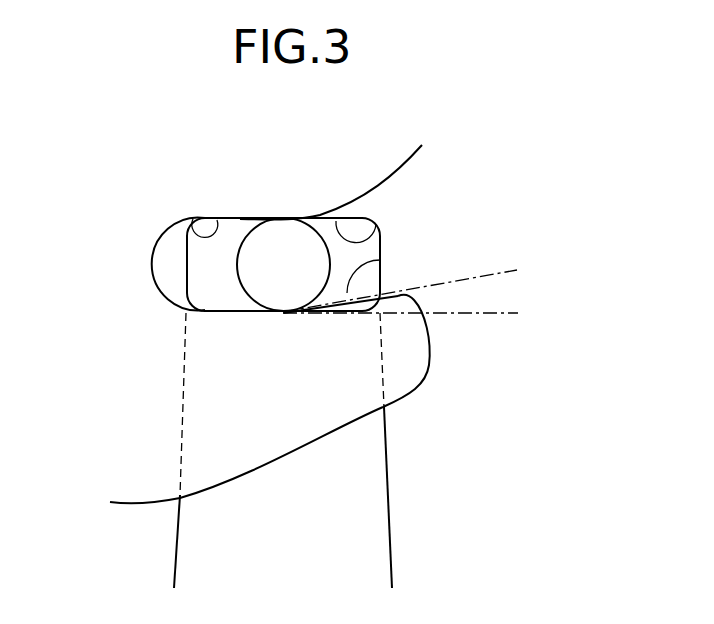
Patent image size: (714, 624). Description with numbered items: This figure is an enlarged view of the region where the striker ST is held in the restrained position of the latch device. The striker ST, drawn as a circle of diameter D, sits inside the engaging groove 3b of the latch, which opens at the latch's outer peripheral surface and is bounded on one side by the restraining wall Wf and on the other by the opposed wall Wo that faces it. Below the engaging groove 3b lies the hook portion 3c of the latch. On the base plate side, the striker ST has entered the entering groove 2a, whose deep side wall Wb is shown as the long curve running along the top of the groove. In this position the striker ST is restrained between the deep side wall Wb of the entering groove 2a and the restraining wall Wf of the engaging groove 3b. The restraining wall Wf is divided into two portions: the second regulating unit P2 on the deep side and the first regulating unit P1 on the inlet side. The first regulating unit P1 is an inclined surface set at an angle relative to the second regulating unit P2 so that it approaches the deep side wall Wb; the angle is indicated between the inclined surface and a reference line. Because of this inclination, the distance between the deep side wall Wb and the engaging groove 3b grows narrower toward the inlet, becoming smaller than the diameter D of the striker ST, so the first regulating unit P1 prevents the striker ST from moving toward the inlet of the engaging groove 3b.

The engaging groove 3b is at (325, 264).
The hook portion 3c is at (325, 420).
The entering groove 2a is at (385, 482).
The opposed wall Wo is at (193, 217).
The deep side wall Wb is at (375, 235).
The restraining wall Wf is at (380, 262).
The striker ST is at (251, 271).
The diameter D is at (284, 218).
The first regulating unit P1 is at (286, 316).
The second regulating unit P2 is at (280, 316).